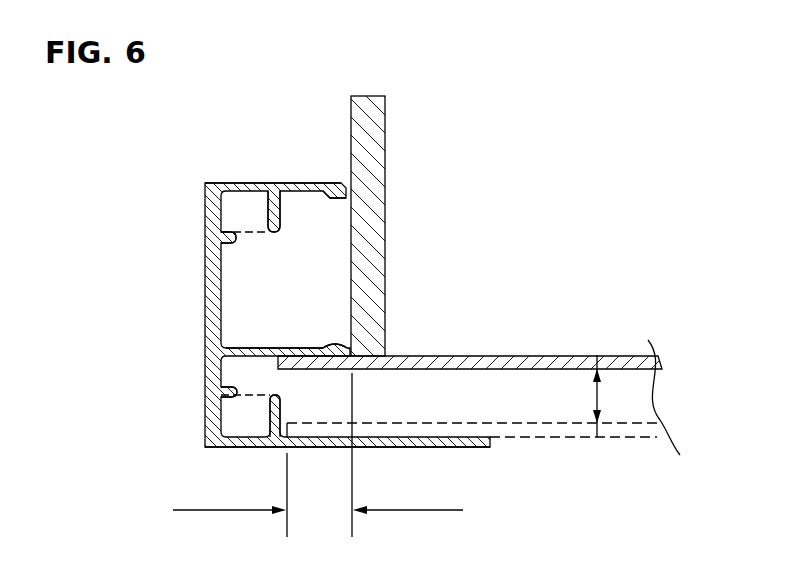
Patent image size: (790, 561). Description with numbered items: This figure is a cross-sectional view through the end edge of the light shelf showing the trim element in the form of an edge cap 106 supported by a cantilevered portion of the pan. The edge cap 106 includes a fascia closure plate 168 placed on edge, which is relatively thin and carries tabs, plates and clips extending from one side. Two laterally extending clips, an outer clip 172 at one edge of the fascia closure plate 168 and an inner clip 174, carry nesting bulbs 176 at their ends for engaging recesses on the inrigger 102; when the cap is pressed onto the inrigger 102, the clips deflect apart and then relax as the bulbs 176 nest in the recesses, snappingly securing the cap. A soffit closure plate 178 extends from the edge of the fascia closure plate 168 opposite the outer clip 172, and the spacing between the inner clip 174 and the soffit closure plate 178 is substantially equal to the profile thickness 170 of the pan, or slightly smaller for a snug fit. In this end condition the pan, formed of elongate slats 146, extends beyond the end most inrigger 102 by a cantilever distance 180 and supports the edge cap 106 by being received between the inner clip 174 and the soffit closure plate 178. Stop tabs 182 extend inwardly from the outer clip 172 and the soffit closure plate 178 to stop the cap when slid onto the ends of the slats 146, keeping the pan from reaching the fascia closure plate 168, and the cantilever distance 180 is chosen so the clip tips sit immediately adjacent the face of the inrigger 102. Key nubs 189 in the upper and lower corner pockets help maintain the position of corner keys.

The inrigger 102 is at (393, 120).
The edge cap 106 is at (172, 396).
The elongate slat 146 is at (540, 351).
The fascia closure plate 168 is at (213, 303).
The profile thickness of the pan 170 is at (597, 397).
The outer clip 172 is at (298, 187).
The inner clip 174 is at (275, 349).
The nesting bulb 176 is at (324, 195).
The soffit closure plate 178 is at (407, 443).
The cantilever distance 180 is at (318, 455).
The stop tab 182 is at (276, 209).
The key nub 189 is at (236, 237).